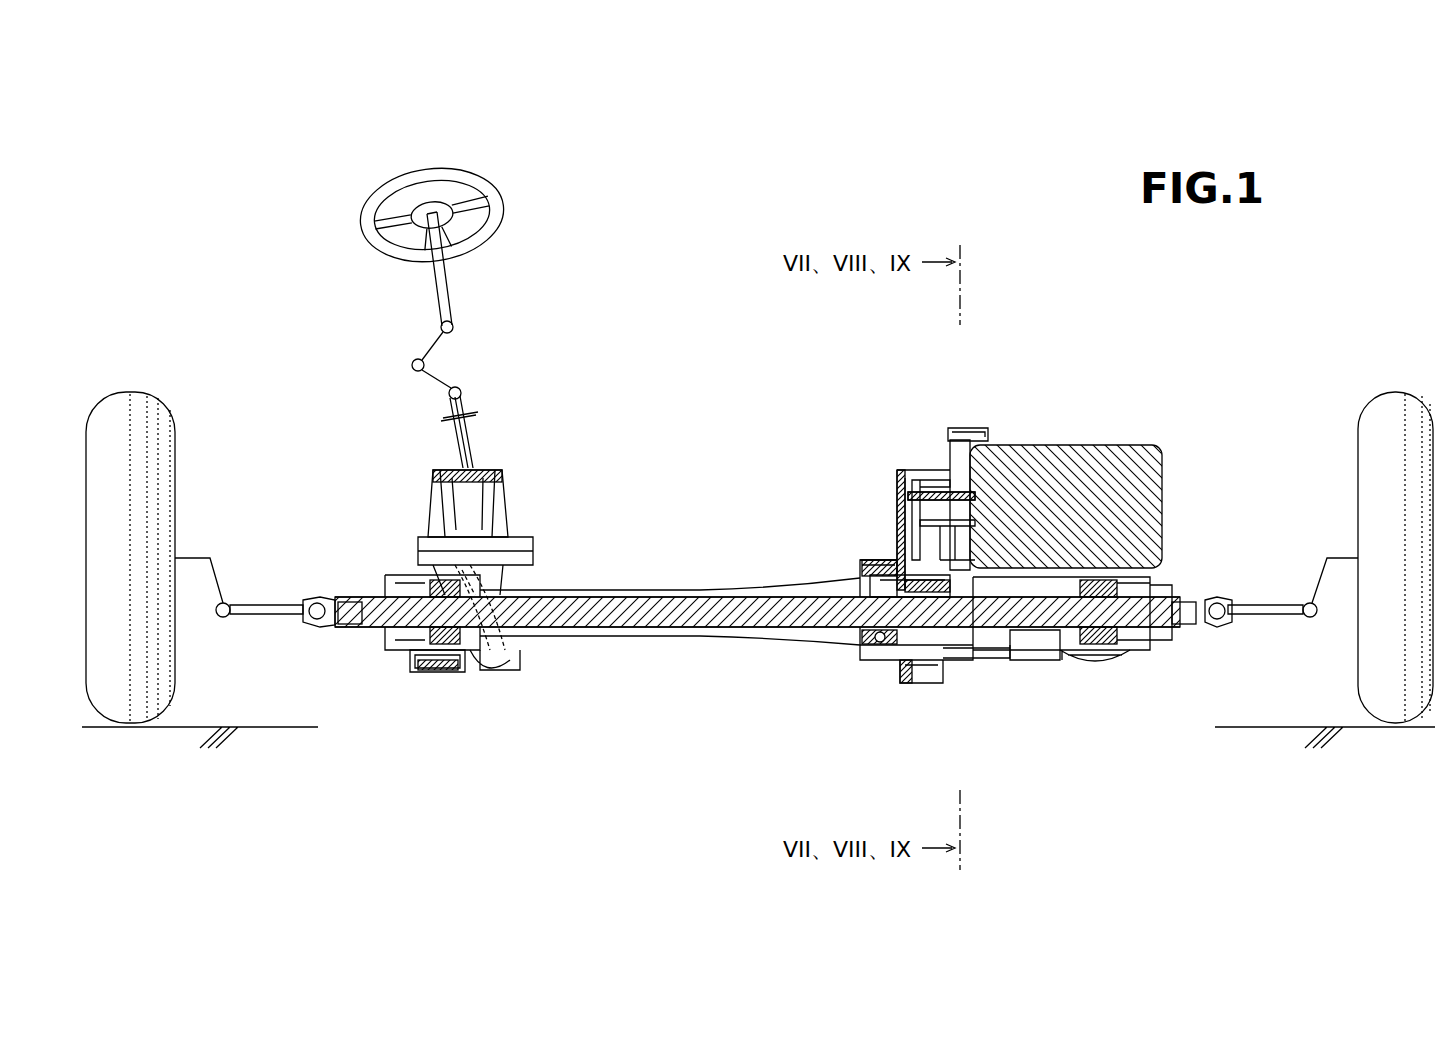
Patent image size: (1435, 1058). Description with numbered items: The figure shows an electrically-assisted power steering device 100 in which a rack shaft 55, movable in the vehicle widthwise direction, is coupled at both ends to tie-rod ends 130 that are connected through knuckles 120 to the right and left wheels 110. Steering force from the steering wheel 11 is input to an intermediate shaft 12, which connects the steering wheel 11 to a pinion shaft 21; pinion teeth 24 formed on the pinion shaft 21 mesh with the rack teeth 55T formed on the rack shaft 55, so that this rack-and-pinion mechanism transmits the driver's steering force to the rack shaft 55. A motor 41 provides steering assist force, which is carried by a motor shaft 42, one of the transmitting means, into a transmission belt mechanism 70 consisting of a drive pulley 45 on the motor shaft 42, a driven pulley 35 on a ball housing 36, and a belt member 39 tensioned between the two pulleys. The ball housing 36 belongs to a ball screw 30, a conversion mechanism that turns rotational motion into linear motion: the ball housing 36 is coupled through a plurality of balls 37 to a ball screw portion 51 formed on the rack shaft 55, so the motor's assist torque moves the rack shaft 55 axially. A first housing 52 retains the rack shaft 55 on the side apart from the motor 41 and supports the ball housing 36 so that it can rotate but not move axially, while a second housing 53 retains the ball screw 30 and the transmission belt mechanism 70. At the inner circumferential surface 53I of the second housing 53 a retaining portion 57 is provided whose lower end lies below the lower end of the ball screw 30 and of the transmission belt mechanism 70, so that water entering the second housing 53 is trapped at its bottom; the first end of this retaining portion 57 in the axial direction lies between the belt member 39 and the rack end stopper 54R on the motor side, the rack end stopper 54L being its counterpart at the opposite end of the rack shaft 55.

The electrically-assisted power steering device 100 is at (636, 158).
The steering wheel 11 is at (413, 178).
The intermediate shaft 12 is at (411, 366).
The pinion shaft 21 is at (450, 440).
The pinion teeth 24 is at (505, 660).
The ball screw 30 is at (843, 533).
The driven pulley 35 is at (907, 520).
The ball housing 36 is at (930, 577).
The balls 37 is at (913, 577).
The belt member 39 is at (900, 550).
The motor 41 is at (1035, 500).
The motor shaft 42 is at (945, 468).
The drive pulley 45 is at (913, 490).
The ball screw portion 51 is at (830, 593).
The first housing 52 is at (835, 652).
The second housing 53 is at (925, 673).
The inner circumferential surface 53I is at (985, 645).
The left rack bushing 54L is at (395, 640).
The rack end stopper 54R is at (1105, 667).
The rack shaft 55 is at (680, 622).
The rack teeth 55T is at (447, 672).
The retaining portion 57 is at (1010, 648).
The transmission belt mechanism 70 is at (856, 469).
The wheels 110 is at (115, 405).
The knuckles 120 is at (195, 558).
The tie-rod ends 130 is at (268, 605).